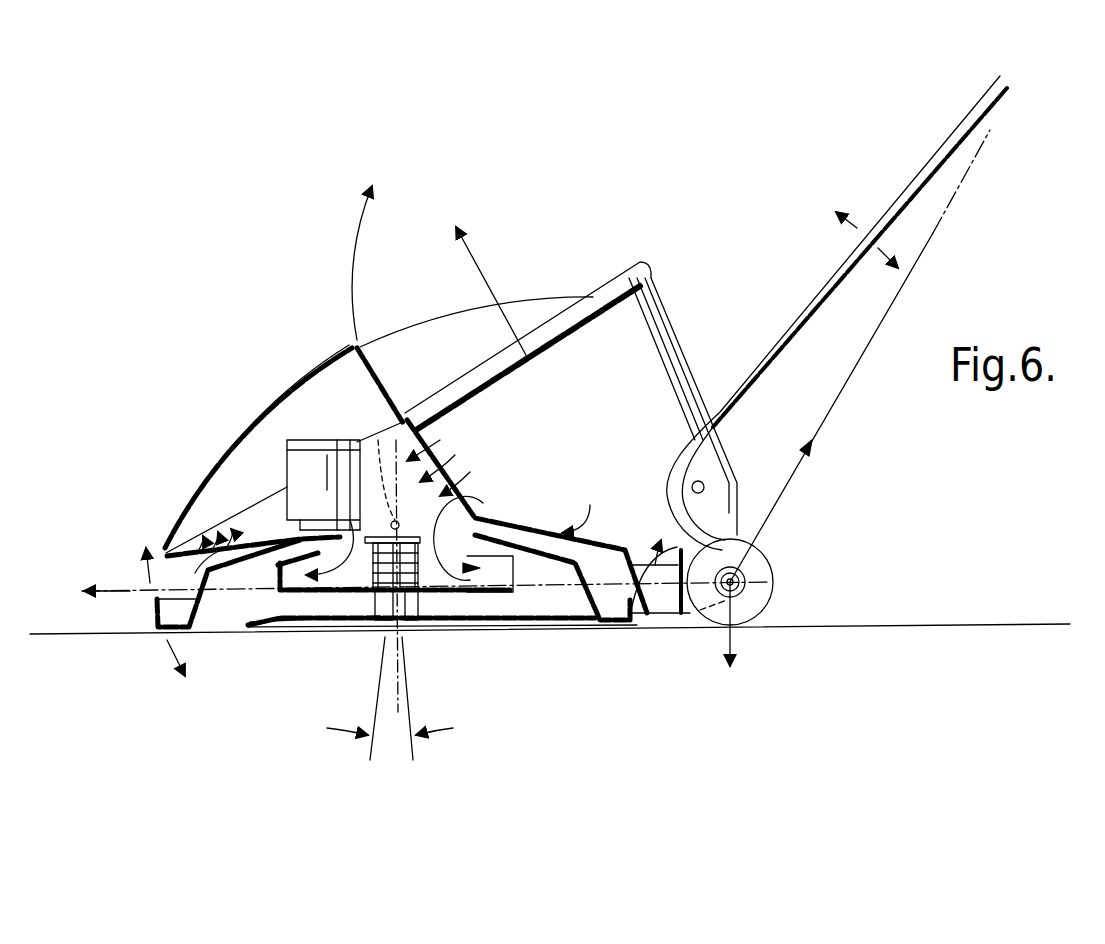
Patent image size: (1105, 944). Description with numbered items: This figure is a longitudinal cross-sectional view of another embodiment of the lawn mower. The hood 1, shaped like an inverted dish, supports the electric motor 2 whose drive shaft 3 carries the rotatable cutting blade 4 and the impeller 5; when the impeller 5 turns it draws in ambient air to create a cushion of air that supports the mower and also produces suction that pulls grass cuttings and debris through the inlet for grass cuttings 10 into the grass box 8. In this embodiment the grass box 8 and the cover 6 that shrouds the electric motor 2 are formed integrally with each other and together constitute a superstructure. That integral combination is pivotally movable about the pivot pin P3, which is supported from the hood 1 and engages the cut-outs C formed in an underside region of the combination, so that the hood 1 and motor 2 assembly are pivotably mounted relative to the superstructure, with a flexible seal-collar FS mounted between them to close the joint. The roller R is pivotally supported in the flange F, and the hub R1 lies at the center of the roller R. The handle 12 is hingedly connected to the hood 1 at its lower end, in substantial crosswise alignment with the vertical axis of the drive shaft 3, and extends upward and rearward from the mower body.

The hood 1 is at (258, 571).
The electric motor 2 is at (300, 465).
The drive shaft 3 is at (365, 617).
The cutting blade 4 is at (312, 620).
The impeller 5 is at (513, 572).
The cover 6 is at (282, 400).
The grass box 8 is at (680, 340).
The inlet for grass cuttings 10 is at (670, 607).
The handle 12 is at (803, 322).
The cut-outs C is at (387, 576).
The pivot pin P3 is at (440, 575).
The flexible seal-collar FS is at (500, 570).
The flange F is at (735, 535).
The roller R is at (753, 595).
The wheel axle R1 is at (747, 580).